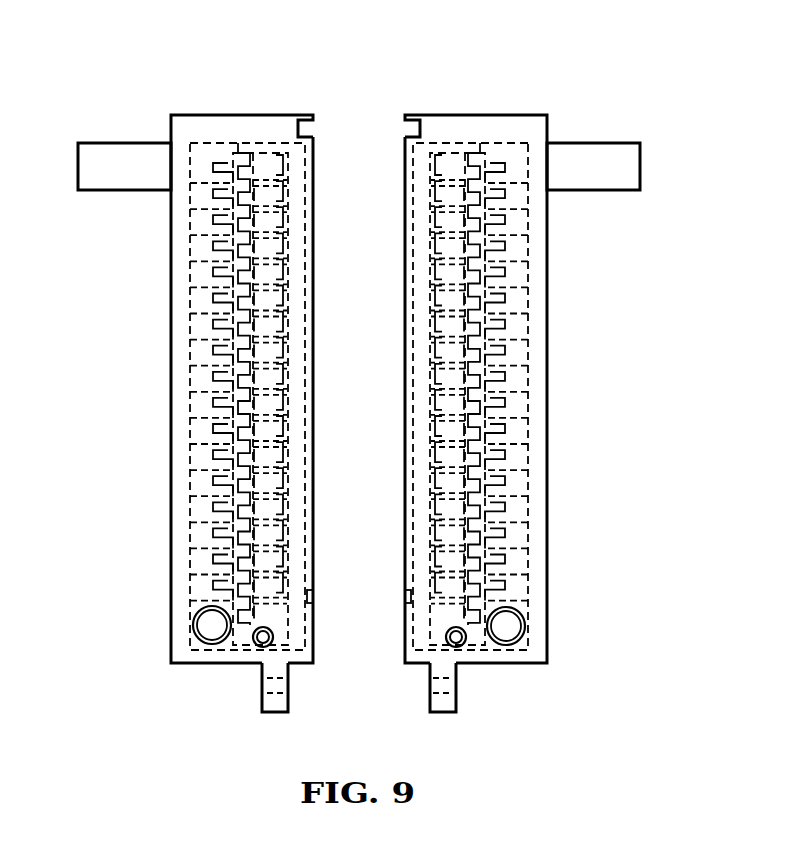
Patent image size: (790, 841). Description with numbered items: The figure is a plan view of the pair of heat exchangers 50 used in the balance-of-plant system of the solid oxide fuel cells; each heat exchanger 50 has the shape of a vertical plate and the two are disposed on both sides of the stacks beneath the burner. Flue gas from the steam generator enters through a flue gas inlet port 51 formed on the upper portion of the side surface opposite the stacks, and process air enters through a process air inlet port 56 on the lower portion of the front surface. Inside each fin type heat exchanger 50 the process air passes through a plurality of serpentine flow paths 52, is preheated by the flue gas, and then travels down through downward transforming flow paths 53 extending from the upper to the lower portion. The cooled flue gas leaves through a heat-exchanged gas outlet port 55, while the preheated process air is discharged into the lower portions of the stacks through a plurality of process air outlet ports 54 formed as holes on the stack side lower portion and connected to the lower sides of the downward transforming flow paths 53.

The heat exchanger 50 is at (580, 25).
The flue gas inlet port 51 is at (128, 156).
The serpentine flow path 52 is at (260, 222).
The downward transforming flow path 53 is at (298, 618).
The process air outlet port 54 is at (313, 593).
The heat-exchanged gas outlet port 55 is at (195, 612).
The process air inlet port 56 is at (254, 645).